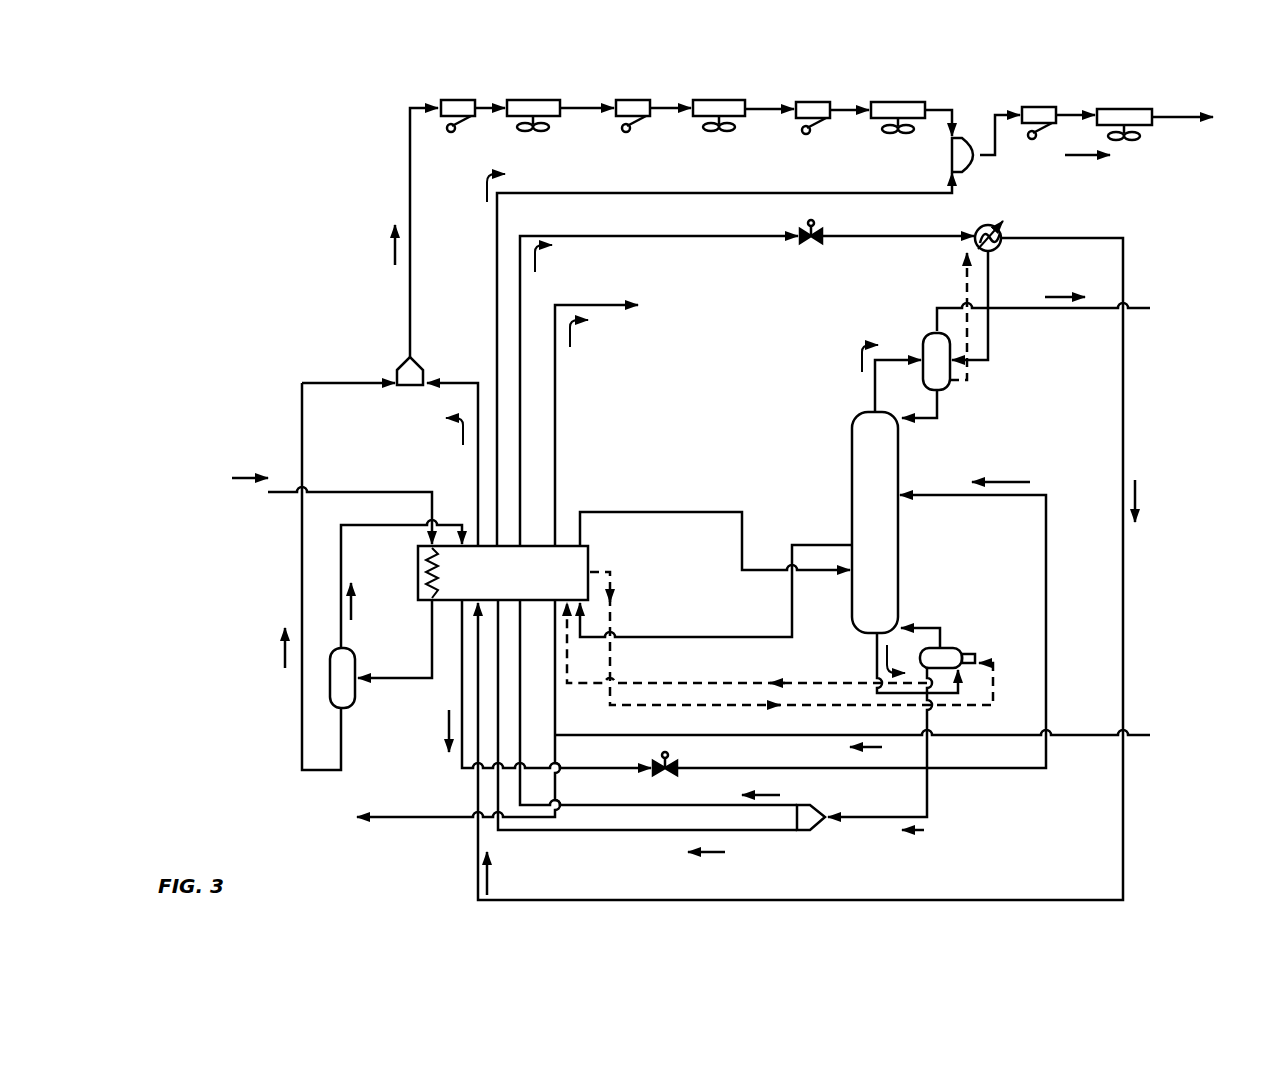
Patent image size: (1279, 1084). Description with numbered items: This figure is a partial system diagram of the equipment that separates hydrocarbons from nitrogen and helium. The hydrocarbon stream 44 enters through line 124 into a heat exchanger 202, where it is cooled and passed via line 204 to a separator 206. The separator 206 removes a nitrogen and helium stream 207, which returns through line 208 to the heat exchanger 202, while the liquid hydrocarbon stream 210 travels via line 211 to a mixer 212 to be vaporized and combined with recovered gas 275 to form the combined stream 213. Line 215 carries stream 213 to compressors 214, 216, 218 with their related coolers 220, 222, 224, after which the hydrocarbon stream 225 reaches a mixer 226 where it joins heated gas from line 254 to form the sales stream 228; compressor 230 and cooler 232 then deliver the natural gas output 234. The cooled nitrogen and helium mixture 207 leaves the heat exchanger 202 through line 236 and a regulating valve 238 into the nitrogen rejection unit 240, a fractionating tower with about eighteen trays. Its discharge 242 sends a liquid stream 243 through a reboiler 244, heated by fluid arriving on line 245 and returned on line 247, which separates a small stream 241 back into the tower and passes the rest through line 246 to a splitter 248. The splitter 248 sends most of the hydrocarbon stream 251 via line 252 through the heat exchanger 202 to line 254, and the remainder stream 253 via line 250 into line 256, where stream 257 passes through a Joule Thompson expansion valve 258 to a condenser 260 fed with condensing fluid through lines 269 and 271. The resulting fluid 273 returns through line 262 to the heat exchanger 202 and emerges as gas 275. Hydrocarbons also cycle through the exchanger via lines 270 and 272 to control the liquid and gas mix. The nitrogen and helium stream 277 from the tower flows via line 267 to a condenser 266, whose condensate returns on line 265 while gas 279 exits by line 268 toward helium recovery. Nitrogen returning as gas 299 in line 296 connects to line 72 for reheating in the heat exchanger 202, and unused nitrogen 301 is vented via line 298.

The hydrocarbon stream 44 is at (262, 474).
The line 72 is at (390, 816).
The line or pipe 124 is at (384, 492).
The heat exchanger 202 is at (418, 572).
The line 204 is at (376, 676).
The separator 206 is at (354, 652).
The nitrogen and helium stream 207 is at (1000, 482).
The line 208 is at (348, 558).
The liquid hydrocarbon stream 210 is at (282, 648).
The line 211 is at (302, 740).
The mixer 212 is at (406, 360).
The combined stream 213 is at (390, 243).
The compressor 214 is at (458, 100).
The line 215 is at (410, 158).
The compressor 216 is at (636, 100).
The compressor 218 is at (814, 102).
The cooler 220 is at (544, 100).
The cooler 222 is at (730, 100).
The cooler 224 is at (901, 102).
The hydrocarbon stream 225 is at (975, 128).
The mixer 226 is at (966, 170).
The sales stream 228 is at (1092, 156).
The compressor 230 is at (1040, 107).
The cooler 232 is at (1134, 109).
The natural gas output 234 is at (1185, 124).
The line 236 is at (1046, 582).
The regulating valve 238 is at (678, 758).
The nitrogen rejection unit 240 is at (904, 560).
The small stream 241 is at (925, 628).
The discharge 242 is at (875, 666).
The liquid stream 243 is at (905, 615).
The reboiler 244 is at (962, 648).
The line 245 is at (836, 708).
The line 246 is at (927, 798).
The line 247 is at (700, 682).
The splitter 248 is at (808, 832).
The line 250 is at (585, 804).
The hydrocarbon stream 251 is at (484, 190).
The line 252 is at (608, 833).
The stream 253 is at (766, 792).
The line 254 is at (596, 192).
The line 256 is at (670, 234).
The stream 257 is at (548, 260).
The Joule Thompson expansion valve 258 is at (830, 228).
The condenser 260 is at (980, 226).
The line 262 is at (1123, 568).
The line 265 is at (912, 424).
The condenser 266 is at (950, 392).
The line 267 is at (870, 378).
The line 268 is at (1048, 312).
The line 269 is at (962, 292).
The line 270 is at (792, 610).
The line 271 is at (990, 278).
The line 272 is at (655, 512).
The fluid 273 is at (1135, 498).
The gas 275 is at (453, 432).
The nitrogen and helium stream 277 is at (862, 340).
The gas 279 is at (1062, 290).
The line 296 is at (720, 734).
The line 298 is at (560, 400).
The gas 299 is at (868, 749).
The unused nitrogen 301 is at (584, 336).